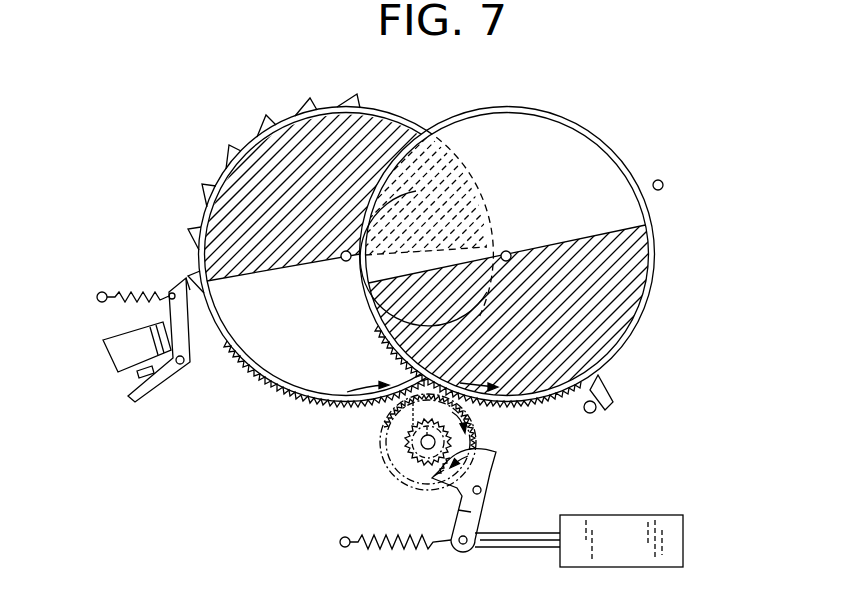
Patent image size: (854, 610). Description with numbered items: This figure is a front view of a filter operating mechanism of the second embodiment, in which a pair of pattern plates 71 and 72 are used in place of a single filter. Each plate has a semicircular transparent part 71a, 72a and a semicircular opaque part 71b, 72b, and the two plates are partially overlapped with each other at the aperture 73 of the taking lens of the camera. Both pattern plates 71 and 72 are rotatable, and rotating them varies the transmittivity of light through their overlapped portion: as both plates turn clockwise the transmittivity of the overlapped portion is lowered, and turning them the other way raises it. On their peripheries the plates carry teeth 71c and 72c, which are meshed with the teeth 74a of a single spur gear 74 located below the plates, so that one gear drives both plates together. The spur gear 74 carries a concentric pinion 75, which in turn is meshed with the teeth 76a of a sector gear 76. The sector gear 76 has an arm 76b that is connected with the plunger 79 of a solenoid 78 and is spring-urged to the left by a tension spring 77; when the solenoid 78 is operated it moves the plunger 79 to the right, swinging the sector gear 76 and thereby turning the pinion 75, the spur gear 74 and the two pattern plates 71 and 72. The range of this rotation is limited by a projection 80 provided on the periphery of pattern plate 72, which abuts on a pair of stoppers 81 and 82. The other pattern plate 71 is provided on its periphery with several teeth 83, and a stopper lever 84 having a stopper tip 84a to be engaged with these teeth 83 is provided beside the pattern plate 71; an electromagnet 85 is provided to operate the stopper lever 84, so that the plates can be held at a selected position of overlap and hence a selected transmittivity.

The pattern plate 71 is at (354, 261).
The semicircular transparent part 71a is at (244, 358).
The semicircular opaque part 71b is at (265, 150).
The teeth 71c is at (298, 408).
The pattern plate 72 is at (508, 260).
The semicircular transparent part 72a is at (548, 128).
The semicircular opaque part 72b is at (648, 280).
The teeth 72c is at (553, 406).
The aperture 73 is at (489, 158).
The spur gear 74 is at (398, 459).
The teeth 74a is at (392, 410).
The pinion 75 is at (424, 484).
The sector gear 76 is at (487, 486).
The teeth 76a is at (478, 447).
The arm 76b is at (480, 512).
The tension spring 77 is at (422, 546).
The solenoid 78 is at (633, 517).
The plunger 79 is at (490, 543).
The projection 80 is at (612, 392).
The stopper 81 is at (595, 411).
The stopper 82 is at (663, 186).
The teeth 83 is at (273, 124).
The stopper lever 84 is at (143, 337).
The stopper tip 84a is at (184, 280).
The electromagnet 85 is at (120, 360).